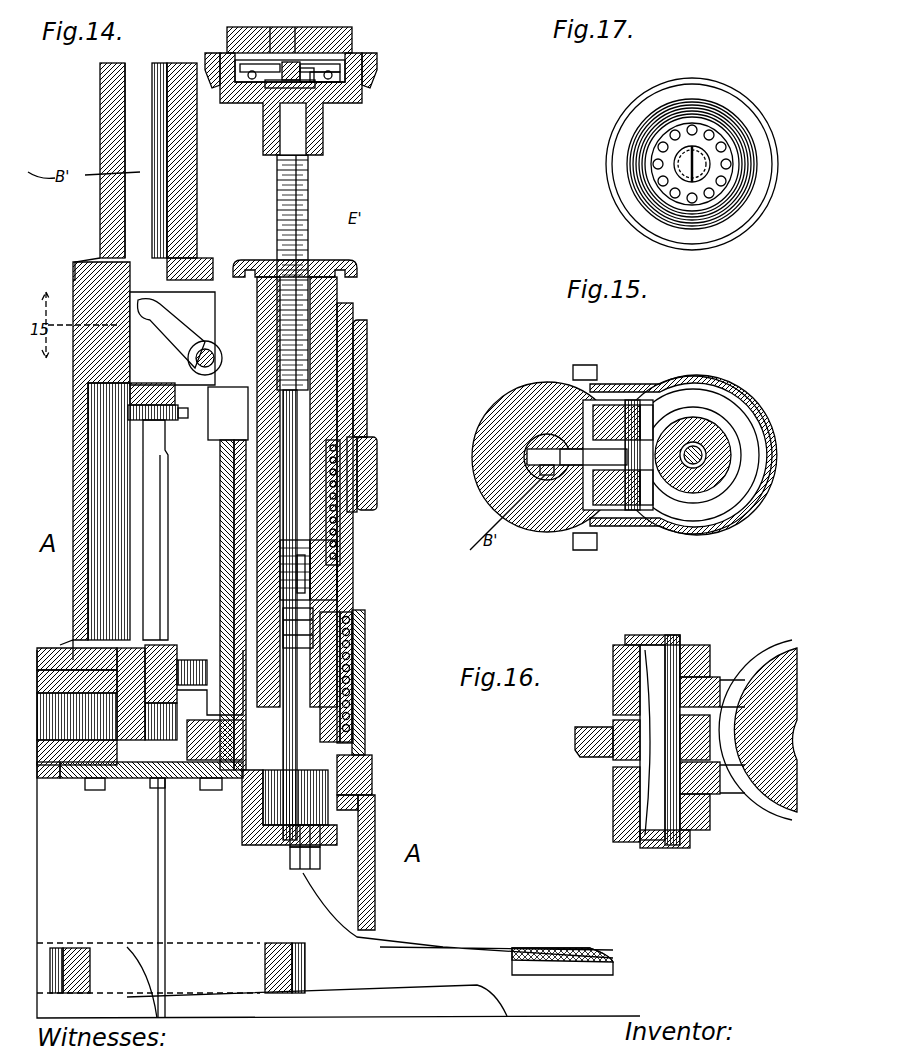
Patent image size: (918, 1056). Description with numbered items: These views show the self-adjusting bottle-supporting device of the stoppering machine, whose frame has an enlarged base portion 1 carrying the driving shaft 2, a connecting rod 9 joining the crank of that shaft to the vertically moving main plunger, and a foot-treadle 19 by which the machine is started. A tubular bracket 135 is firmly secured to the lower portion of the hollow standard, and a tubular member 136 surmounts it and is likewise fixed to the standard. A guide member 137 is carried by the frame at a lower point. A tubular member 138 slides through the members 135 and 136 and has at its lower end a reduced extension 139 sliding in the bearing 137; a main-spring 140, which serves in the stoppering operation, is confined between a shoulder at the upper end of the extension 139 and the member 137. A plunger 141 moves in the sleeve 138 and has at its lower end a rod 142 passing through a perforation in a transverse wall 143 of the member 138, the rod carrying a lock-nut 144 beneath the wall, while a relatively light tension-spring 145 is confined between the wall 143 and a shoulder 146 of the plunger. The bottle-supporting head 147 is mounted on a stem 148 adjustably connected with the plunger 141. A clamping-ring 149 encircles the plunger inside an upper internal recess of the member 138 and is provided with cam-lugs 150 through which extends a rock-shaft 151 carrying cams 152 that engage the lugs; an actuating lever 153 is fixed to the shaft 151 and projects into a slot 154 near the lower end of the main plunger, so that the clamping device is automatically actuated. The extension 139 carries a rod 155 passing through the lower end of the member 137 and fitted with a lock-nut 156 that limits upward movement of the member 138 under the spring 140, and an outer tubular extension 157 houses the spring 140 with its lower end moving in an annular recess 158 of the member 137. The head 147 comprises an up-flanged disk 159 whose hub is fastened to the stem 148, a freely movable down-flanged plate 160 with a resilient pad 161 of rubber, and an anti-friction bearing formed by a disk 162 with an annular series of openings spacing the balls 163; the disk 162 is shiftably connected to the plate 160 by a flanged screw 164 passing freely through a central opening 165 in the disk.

In FIG. 14, the enlarged base portion 1 is at (62, 650).
In FIG. 14, the shaft 2 is at (60, 715).
In FIG. 14, the connecting rod 9 is at (158, 528).
In FIG. 14, the foot-treadle 19 is at (561, 950).
In FIG. 14, the tubular bracket 135 is at (378, 503).
In FIG. 15, the tubular bracket 135 is at (690, 533).
In FIG. 14, the tubular member 136 is at (355, 386).
In FIG. 15, the tubular member 136 is at (716, 527).
In FIG. 14, the guide member 137 is at (378, 807).
In FIG. 14, the tubular member 138 is at (352, 543).
In FIG. 15, the tubular member 138 is at (736, 478).
In FIG. 14, the reduced extension 139 is at (366, 682).
In FIG. 14, the main-spring 140 is at (354, 638).
In FIG. 14, the plunger 141 is at (340, 278).
In FIG. 15, the plunger 141 is at (740, 512).
In FIG. 16, the plunger 141 is at (762, 805).
In FIG. 14, the rod 142 is at (312, 574).
In FIG. 14, the transverse wall 143 is at (308, 593).
In FIG. 14, the lock-nut 144 is at (283, 620).
In FIG. 14, the tension-spring 145 is at (378, 450).
In FIG. 14, the shoulder 146 is at (343, 438).
In FIG. 14, the bottle-supporting head 147 is at (325, 85).
In FIG. 17, the bottle-supporting head 147 is at (737, 99).
In FIG. 14, the stem 148 is at (310, 188).
In FIG. 15, the stem 148 is at (708, 448).
In FIG. 14, the clamping-ring 149 is at (368, 360).
In FIG. 15, the clamping-ring 149 is at (708, 420).
In FIG. 16, the clamping-ring 149 is at (760, 660).
In FIG. 15, the cam-lugs 150 is at (612, 428).
In FIG. 16, the cam-lugs 150 is at (613, 700).
In FIG. 15, the rock-shaft 151 is at (638, 410).
In FIG. 16, the rock-shaft 151 is at (658, 655).
In FIG. 15, the cams 152 is at (652, 405).
In FIG. 16, the cams 152 is at (708, 644).
In FIG. 14, the actuating lever 153 is at (210, 328).
In FIG. 15, the actuating lever 153 is at (577, 440).
In FIG. 16, the actuating lever 153 is at (592, 758).
In FIG. 14, the slot 154 is at (195, 298).
In FIG. 15, the slot 154 is at (527, 456).
In FIG. 14, the rod 155 is at (242, 810).
In FIG. 14, the lock-nut 156 is at (290, 852).
In FIG. 14, the outer tubular extension 157 is at (366, 714).
In FIG. 14, the annular recess 158 is at (373, 777).
In FIG. 14, the up-flanged disk 159 is at (365, 98).
In FIG. 14, the down-flanged disk 160 is at (215, 56).
In FIG. 17, the down-flanged disk 160 is at (628, 113).
In FIG. 14, the resilient pad 161 is at (355, 34).
In FIG. 14, the disk 162 is at (257, 104).
In FIG. 17, the disk 162 is at (630, 168).
In FIG. 14, the anti-friction balls 163 is at (362, 63).
In FIG. 17, the anti-friction balls 163 is at (657, 148).
In FIG. 14, the flanged screw 164 is at (284, 50).
In FIG. 17, the flanged screw 164 is at (676, 172).
In FIG. 14, the central opening 165 is at (318, 100).